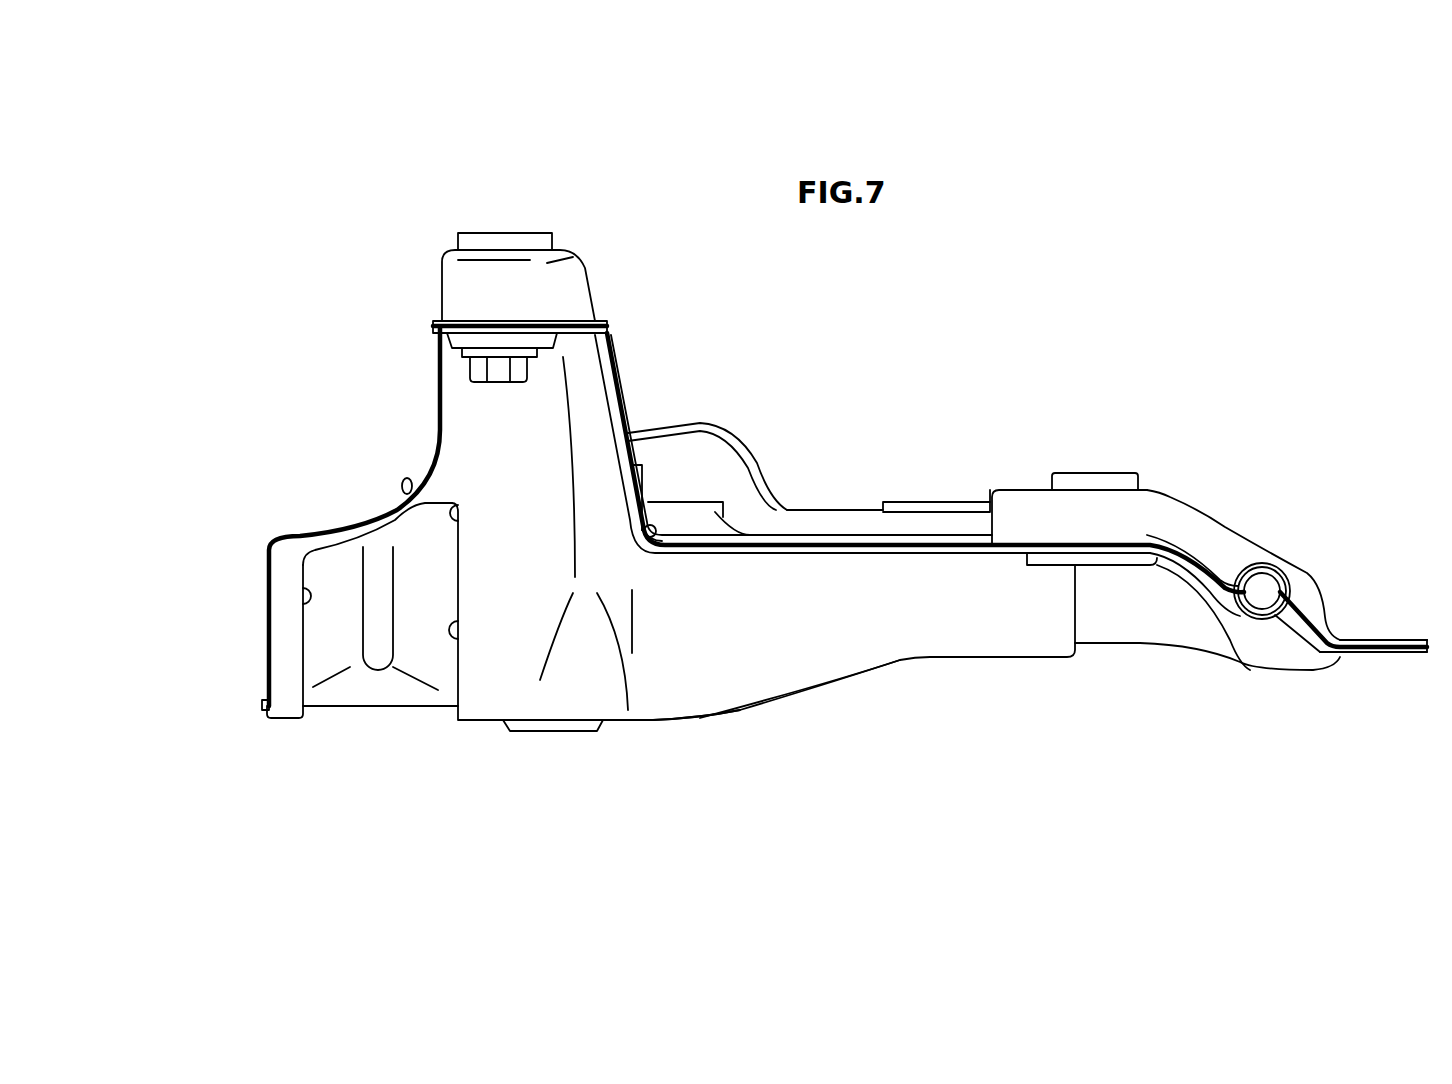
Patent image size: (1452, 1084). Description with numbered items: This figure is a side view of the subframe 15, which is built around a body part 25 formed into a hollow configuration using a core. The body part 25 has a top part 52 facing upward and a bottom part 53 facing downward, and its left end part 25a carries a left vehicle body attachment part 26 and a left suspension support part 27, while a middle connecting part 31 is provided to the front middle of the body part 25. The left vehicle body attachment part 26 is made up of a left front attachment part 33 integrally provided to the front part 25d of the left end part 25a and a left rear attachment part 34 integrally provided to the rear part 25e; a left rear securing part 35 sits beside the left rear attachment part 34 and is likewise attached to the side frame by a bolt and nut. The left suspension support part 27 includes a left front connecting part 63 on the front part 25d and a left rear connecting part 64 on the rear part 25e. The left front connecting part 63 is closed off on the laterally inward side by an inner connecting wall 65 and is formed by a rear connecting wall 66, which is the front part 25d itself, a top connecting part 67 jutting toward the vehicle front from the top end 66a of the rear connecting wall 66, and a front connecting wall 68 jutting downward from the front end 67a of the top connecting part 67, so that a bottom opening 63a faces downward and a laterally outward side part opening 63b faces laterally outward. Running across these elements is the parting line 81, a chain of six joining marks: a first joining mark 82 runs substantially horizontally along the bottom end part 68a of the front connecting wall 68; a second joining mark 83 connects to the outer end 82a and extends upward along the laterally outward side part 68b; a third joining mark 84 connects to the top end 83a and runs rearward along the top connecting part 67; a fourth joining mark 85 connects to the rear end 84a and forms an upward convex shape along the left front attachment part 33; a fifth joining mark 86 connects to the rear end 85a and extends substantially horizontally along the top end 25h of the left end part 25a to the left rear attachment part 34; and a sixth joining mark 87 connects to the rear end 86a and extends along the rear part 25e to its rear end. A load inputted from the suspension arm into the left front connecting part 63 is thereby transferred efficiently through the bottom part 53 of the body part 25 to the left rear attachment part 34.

The subframe 15 is at (1035, 382).
The body part 25 is at (845, 510).
The left end part 25a is at (898, 613).
The front part of left end part 25d is at (488, 588).
The rear part of left end part 25e is at (1288, 640).
The top end of left end part 25h is at (940, 543).
The left vehicle body attachment part 26 is at (440, 285).
The left suspension support part 27 is at (240, 448).
The middle connecting part 31 is at (682, 445).
The left front attachment part 33 is at (570, 280).
The left rear attachment part 34 is at (1155, 505).
The left rear securing part 35 is at (1390, 640).
The top part 52 is at (810, 517).
The bottom part 53 is at (747, 710).
The left front connecting part 63 is at (265, 565).
The bottom opening 63a is at (303, 720).
The laterally outward side part opening 63b is at (310, 603).
The left rear connecting part 64 is at (1170, 573).
The inner connecting wall 65 is at (347, 657).
The rear connecting wall 66 is at (455, 648).
The top end of rear connecting wall 66a is at (448, 507).
The top connecting part 67 is at (380, 513).
The front end of top connecting part 67a is at (305, 540).
The front connecting wall 68 is at (265, 625).
The bottom end part of front connecting wall 68a is at (283, 720).
The laterally outward side part of front connecting wall 68b is at (297, 655).
The parting line 81 is at (1058, 545).
The first joining mark 82 is at (265, 700).
The outer end of first joining mark 82a is at (262, 710).
The second joining mark 83 is at (265, 655).
The top end of second joining mark 83a is at (267, 543).
The third joining mark 84 is at (353, 527).
The rear end of third joining mark 84a is at (420, 500).
The fourth joining mark 85 is at (440, 372).
The rear end of fourth joining mark 85a is at (652, 538).
The fifth joining mark 86 is at (890, 543).
The rear end of fifth joining mark 86a is at (1180, 555).
The sixth joining mark 87 is at (1262, 574).